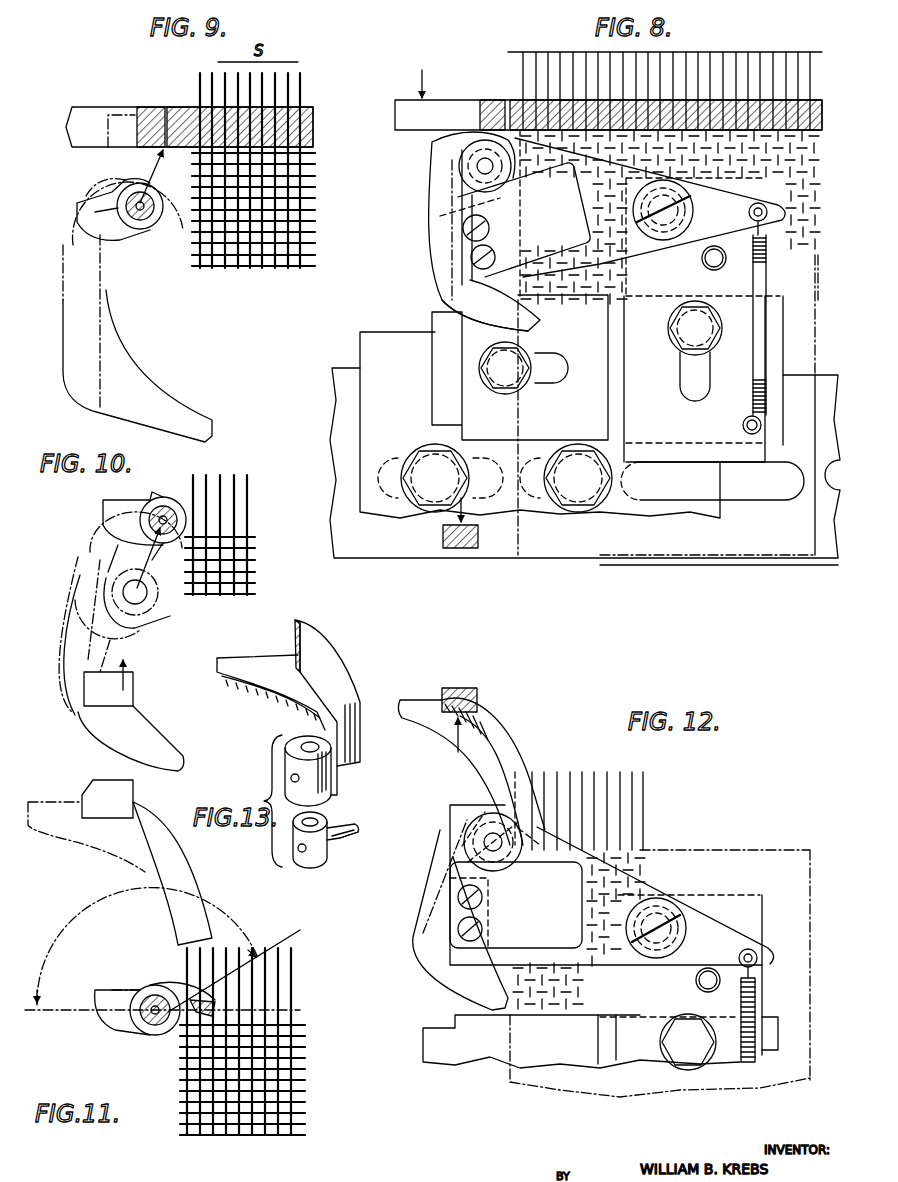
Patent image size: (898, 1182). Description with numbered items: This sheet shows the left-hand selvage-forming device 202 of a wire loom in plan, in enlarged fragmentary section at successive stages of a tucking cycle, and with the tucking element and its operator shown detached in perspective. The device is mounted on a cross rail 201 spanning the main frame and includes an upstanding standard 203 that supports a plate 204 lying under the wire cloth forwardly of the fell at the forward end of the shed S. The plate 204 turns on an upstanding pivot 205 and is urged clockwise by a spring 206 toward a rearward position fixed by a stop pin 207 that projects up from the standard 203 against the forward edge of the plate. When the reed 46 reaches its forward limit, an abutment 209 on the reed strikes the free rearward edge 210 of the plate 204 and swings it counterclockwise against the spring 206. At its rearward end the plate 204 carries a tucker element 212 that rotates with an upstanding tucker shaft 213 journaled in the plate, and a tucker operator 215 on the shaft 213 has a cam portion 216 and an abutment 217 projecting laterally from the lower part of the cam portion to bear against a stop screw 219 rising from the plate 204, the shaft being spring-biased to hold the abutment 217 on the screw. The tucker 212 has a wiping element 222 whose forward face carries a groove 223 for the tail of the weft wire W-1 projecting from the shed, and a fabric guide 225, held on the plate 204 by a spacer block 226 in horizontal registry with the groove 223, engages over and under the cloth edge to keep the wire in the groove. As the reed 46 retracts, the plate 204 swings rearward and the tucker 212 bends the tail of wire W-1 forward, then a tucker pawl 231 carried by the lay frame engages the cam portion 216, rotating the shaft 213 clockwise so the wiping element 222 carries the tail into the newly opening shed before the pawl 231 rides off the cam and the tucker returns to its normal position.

In FIG. 8, the shed S is at (785, 73).
In FIG. 9, the weft wire W-1 is at (316, 150).
In FIG. 10, the weft wire W-1 is at (256, 540).
In FIG. 11, the weft wire W-1 is at (302, 1036).
In FIG. 8, the weft wire W-1 is at (824, 132).
In FIG. 12, the weft wire W-1 is at (642, 850).
In FIG. 9, the reed 46 is at (86, 110).
In FIG. 8, the reed 46 is at (410, 126).
In FIG. 8, the cross rail 201 is at (342, 372).
In FIG. 8, the left-hand selvage-forming device 202 is at (462, 376).
In FIG. 12, the left-hand selvage-forming device 202 is at (450, 806).
In FIG. 8, the upstanding standard 203 is at (398, 326).
In FIG. 12, the upstanding standard 203 is at (566, 1064).
In FIG. 8, the plate 204 is at (682, 252).
In FIG. 12, the plate 204 is at (700, 912).
In FIG. 8, the upstanding pivot 205 is at (692, 212).
In FIG. 12, the upstanding pivot 205 is at (658, 960).
In FIG. 8, the spring 206 is at (745, 400).
In FIG. 12, the spring 206 is at (758, 1000).
In FIG. 8, the stop pin 207 is at (720, 270).
In FIG. 12, the stop pin 207 is at (704, 990).
In FIG. 9, the abutment 209 is at (152, 107).
In FIG. 8, the abutment 209 is at (482, 100).
In FIG. 8, the free rearward edge 210 is at (456, 132).
In FIG. 12, the free rearward edge 210 is at (470, 806).
In FIG. 9, the tucker element 212 is at (114, 107).
In FIG. 10, the tucker element 212 is at (104, 522).
In FIG. 13, the tucker element 212 is at (310, 862).
In FIG. 11, the tucker element 212 is at (148, 990).
In FIG. 8, the tucker element 212 is at (460, 180).
In FIG. 12, the tucker element 212 is at (478, 828).
In FIG. 9, the tucker shaft 213 is at (150, 218).
In FIG. 10, the tucker shaft 213 is at (164, 516).
In FIG. 11, the tucker shaft 213 is at (150, 1022).
In FIG. 8, the tucker shaft 213 is at (485, 167).
In FIG. 12, the tucker shaft 213 is at (498, 845).
In FIG. 9, the tucker operator 215 is at (134, 370).
In FIG. 10, the tucker operator 215 is at (78, 560).
In FIG. 13, the tucker operator 215 is at (340, 668).
In FIG. 11, the tucker operator 215 is at (150, 868).
In FIG. 8, the tucker operator 215 is at (432, 230).
In FIG. 12, the tucker operator 215 is at (576, 747).
In FIG. 10, the cam portion 216 is at (80, 720).
In FIG. 13, the cam portion 216 is at (326, 640).
In FIG. 11, the cam portion 216 is at (136, 832).
In FIG. 8, the cam portion 216 is at (440, 290).
In FIG. 12, the cam portion 216 is at (490, 730).
In FIG. 13, the abutment 217 is at (262, 652).
In FIG. 8, the abutment 217 is at (540, 322).
In FIG. 12, the abutment 217 is at (426, 720).
In FIG. 8, the stop screw 219 is at (496, 256).
In FIG. 12, the stop screw 219 is at (484, 930).
In FIG. 9, the wiping element 222 is at (95, 222).
In FIG. 10, the wiping element 222 is at (106, 505).
In FIG. 13, the wiping element 222 is at (346, 826).
In FIG. 11, the wiping element 222 is at (170, 985).
In FIG. 9, the groove 223 is at (86, 196).
In FIG. 13, the groove 223 is at (350, 840).
In FIG. 11, the groove 223 is at (218, 1012).
In FIG. 8, the fabric guide 225 is at (560, 201).
In FIG. 12, the fabric guide 225 is at (576, 901).
In FIG. 8, the spacer block 226 is at (490, 226).
In FIG. 12, the spacer block 226 is at (484, 912).
In FIG. 10, the tucker pawl 231 is at (136, 690).
In FIG. 11, the tucker pawl 231 is at (86, 788).
In FIG. 8, the tucker pawl 231 is at (466, 550).
In FIG. 12, the tucker pawl 231 is at (470, 688).